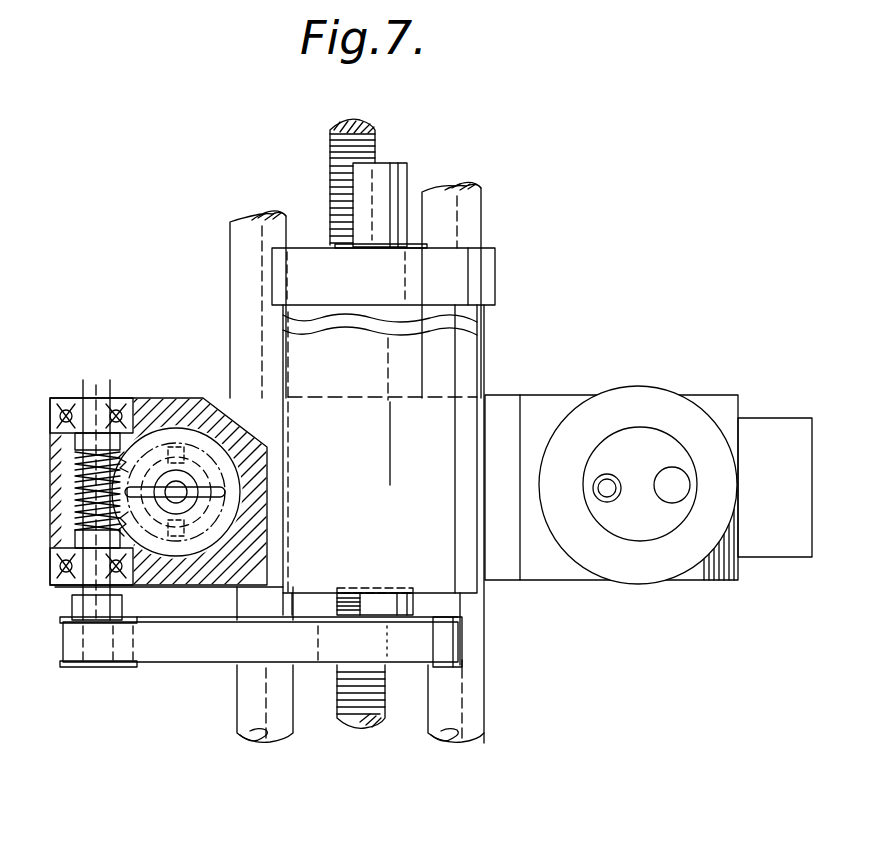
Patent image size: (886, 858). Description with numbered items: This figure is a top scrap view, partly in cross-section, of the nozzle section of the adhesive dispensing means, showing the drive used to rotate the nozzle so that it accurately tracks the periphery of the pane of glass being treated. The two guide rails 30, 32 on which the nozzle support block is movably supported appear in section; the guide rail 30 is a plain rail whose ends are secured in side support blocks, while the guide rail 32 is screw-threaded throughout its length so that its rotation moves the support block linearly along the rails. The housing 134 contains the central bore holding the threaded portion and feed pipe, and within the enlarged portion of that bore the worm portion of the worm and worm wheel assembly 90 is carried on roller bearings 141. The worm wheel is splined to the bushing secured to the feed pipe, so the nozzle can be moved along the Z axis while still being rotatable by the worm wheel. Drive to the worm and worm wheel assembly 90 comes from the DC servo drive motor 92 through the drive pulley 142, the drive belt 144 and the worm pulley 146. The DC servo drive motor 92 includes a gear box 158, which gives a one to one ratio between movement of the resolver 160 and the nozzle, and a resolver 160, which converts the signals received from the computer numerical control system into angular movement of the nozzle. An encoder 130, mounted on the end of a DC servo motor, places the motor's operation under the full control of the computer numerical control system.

The guide rail 30 is at (237, 257).
The screw-threaded guide rail 32 is at (330, 167).
The resolver 160 is at (393, 192).
The gear box 158 is at (482, 290).
The DC servo drive motor 92 is at (467, 382).
The encoder 130 is at (652, 445).
The housing 134 is at (177, 398).
The roller bearings 141 is at (90, 400).
The worm pulley 146 is at (123, 607).
The drive belt 144 is at (223, 650).
The drive pulley 142 is at (450, 667).
The worm and worm wheel assembly 90 is at (142, 524).